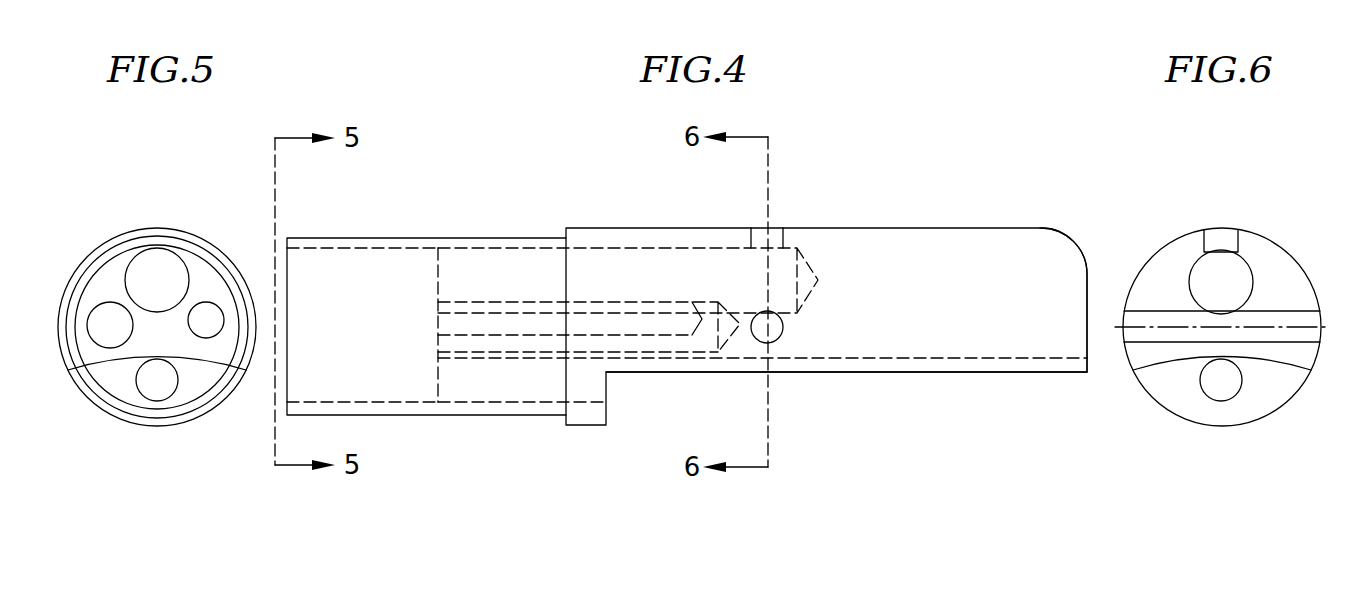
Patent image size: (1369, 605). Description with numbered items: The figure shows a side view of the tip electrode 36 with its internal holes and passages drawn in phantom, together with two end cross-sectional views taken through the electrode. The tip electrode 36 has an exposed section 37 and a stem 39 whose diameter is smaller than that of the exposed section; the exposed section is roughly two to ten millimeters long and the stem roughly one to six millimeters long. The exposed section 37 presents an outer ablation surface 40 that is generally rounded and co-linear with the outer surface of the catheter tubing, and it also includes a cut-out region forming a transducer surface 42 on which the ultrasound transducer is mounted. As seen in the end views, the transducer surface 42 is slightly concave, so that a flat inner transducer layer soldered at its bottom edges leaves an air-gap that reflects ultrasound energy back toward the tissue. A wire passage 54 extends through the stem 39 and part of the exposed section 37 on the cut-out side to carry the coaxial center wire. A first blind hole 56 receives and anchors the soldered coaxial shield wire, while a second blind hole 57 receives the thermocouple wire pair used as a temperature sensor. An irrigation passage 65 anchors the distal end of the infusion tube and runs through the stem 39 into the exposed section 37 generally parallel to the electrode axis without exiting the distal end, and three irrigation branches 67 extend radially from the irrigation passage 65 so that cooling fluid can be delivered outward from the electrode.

In FIG. 4, the tip electrode 36 is at (598, 212).
In FIG. 6, the tip electrode 36 is at (1268, 262).
In FIG. 5, the exposed section 37 is at (197, 360).
In FIG. 4, the exposed section 37 is at (632, 237).
In FIG. 6, the exposed section 37 is at (1246, 242).
In FIG. 5, the stem 39 is at (140, 240).
In FIG. 4, the stem 39 is at (452, 242).
In FIG. 4, the outer ablation surface 40 is at (872, 233).
In FIG. 5, the transducer surface 42 is at (192, 363).
In FIG. 4, the transducer surface 42 is at (925, 372).
In FIG. 6, the transducer surface 42 is at (1283, 365).
In FIG. 5, the wire passage 54 is at (140, 387).
In FIG. 4, the wire passage 54 is at (497, 402).
In FIG. 6, the wire passage 54 is at (1215, 385).
In FIG. 5, the first blind hole 56 is at (107, 310).
In FIG. 4, the first blind hole 56 is at (543, 352).
In FIG. 5, the second blind hole 57 is at (206, 310).
In FIG. 4, the second blind hole 57 is at (661, 336).
In FIG. 5, the irrigation passage 65 is at (157, 265).
In FIG. 4, the irrigation passage 65 is at (493, 250).
In FIG. 6, the irrigation passage 65 is at (1240, 258).
In FIG. 4, the irrigation branches 67 is at (777, 235).
In FIG. 6, the irrigation branches 67 is at (1216, 237).